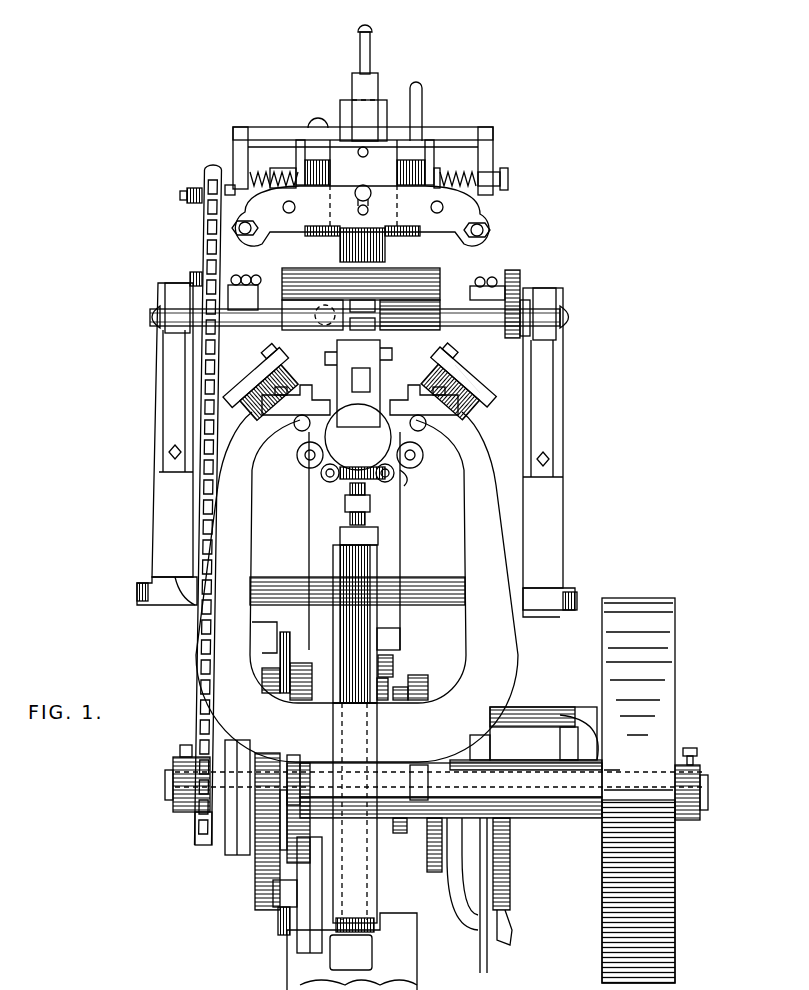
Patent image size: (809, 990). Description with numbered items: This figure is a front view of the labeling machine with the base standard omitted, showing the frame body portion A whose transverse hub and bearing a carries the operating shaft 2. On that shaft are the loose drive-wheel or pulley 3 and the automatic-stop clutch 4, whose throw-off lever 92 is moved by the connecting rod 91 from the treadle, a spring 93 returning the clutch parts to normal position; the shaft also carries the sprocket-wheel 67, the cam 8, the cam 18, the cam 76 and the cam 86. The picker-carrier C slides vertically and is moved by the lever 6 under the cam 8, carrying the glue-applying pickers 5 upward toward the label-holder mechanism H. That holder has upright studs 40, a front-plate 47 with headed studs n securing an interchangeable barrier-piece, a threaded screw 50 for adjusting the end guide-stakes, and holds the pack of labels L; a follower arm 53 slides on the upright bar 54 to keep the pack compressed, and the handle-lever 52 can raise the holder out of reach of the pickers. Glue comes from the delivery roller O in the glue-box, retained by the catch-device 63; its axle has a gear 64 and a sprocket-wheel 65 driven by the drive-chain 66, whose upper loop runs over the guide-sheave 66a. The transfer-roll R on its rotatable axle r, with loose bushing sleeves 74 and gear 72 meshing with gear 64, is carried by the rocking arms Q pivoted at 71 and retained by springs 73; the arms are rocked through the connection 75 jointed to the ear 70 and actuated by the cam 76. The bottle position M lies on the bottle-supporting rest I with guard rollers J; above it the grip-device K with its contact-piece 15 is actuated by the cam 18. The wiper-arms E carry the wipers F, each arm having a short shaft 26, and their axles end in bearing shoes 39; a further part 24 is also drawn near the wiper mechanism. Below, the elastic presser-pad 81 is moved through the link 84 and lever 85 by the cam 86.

The upright bar 54 is at (368, 62).
The follower arm 53 is at (352, 86).
The handle-lever 52 is at (422, 98).
The upright studs 40 is at (315, 125).
The front-plate 47 is at (363, 184).
The headed studs n is at (371, 210).
The right and left threaded screw 50 is at (508, 181).
The label-holder mechanism H is at (493, 224).
The labels L is at (393, 238).
The drive-chain 66 is at (204, 247).
The guide-sheave 66a is at (206, 174).
The sprocket-wheel 65 is at (200, 278).
The rocking arms Q is at (357, 450).
The springs 73 is at (180, 378).
The loose bushing sleeves 74 is at (160, 309).
The rotatable axle r is at (574, 324).
The gear 72 is at (525, 334).
The delivery roller O is at (310, 278).
The catch-device 63 is at (325, 332).
The transfer-roll R is at (410, 315).
The gear 64 is at (520, 278).
The grip-device K is at (358, 383).
The contact-piece 15 is at (365, 380).
The glue-applying pickers 5 is at (360, 391).
The wipers F is at (364, 384).
The wiper-arms E is at (478, 409).
The bottle position M is at (358, 437).
The short shaft 26 is at (424, 458).
The guard rollers J is at (325, 484).
The bottle-supporting rest I is at (367, 484).
The bearing shoes 39 is at (408, 481).
The elastic presser-pad 81 is at (348, 492).
The pivot 71 is at (308, 581).
The ear 70 is at (270, 642).
The picker-carrier C is at (357, 587).
The lever 6 is at (418, 677).
The transverse hub and bearing a is at (440, 780).
The automatic-stop clutch 4 is at (444, 786).
The throw-off lever 92 is at (565, 725).
The drive-wheel or pulley 3 is at (655, 790).
The operating shaft 2 is at (173, 790).
The sprocket-wheel 67 is at (198, 828).
The connection 75 is at (235, 856).
The cam 76 is at (262, 866).
The gear shaft 24 is at (257, 861).
The cam 86 is at (276, 909).
The lever 85 is at (308, 933).
The link 84 is at (300, 948).
The body portion A is at (351, 952).
The cam 18 is at (400, 840).
The cam 8 is at (434, 857).
The spring 93 is at (508, 872).
The connecting rod 91 is at (480, 969).